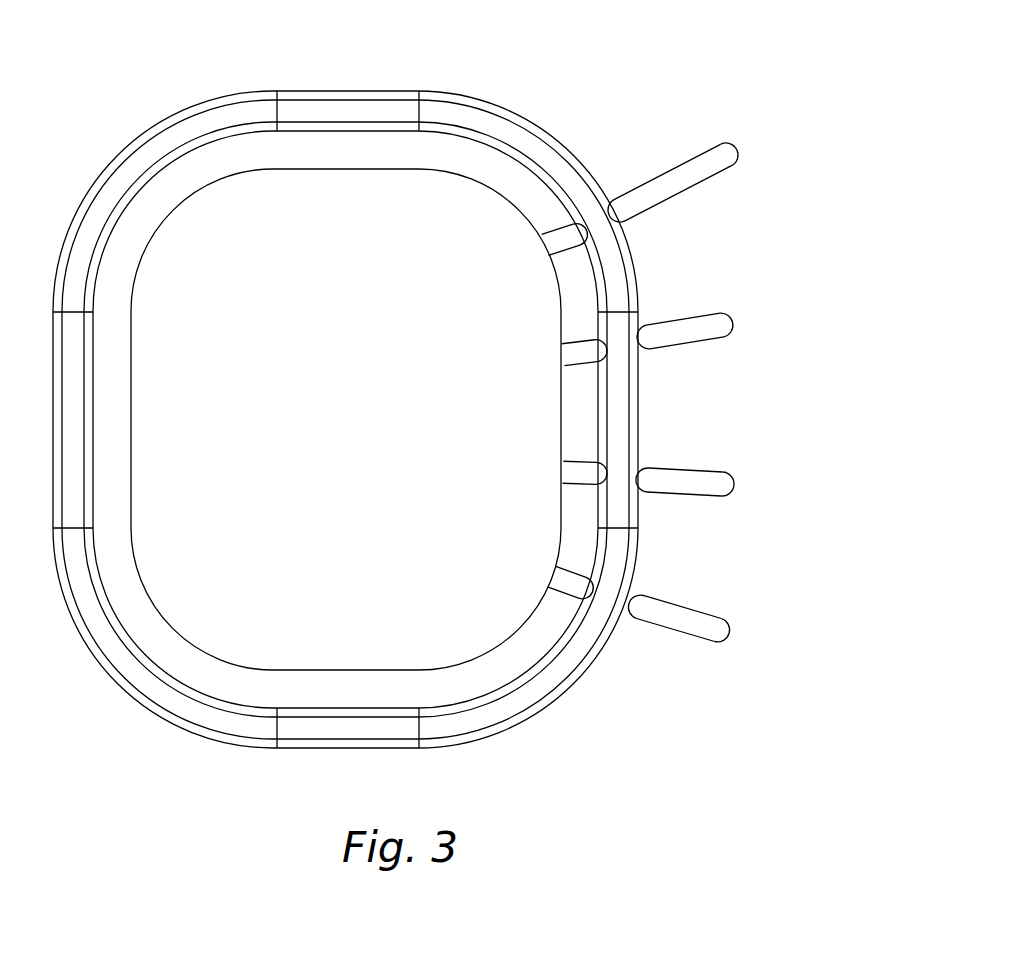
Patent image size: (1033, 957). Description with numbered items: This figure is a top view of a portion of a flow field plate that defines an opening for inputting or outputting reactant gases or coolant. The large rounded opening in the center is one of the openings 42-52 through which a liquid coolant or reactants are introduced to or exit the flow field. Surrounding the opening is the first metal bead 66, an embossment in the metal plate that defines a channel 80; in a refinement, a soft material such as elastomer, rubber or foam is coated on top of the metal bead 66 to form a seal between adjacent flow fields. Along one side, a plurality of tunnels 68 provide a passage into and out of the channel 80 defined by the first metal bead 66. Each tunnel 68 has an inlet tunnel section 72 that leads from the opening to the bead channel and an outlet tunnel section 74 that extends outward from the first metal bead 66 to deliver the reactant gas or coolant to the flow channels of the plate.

The openings 42-52 is at (346, 419).
The first metal bead 66 is at (587, 205).
The tunnels 68 is at (668, 165).
The inlet tunnel section 72 is at (557, 240).
The outlet tunnel section 74 is at (718, 160).
The channel 80 is at (567, 660).